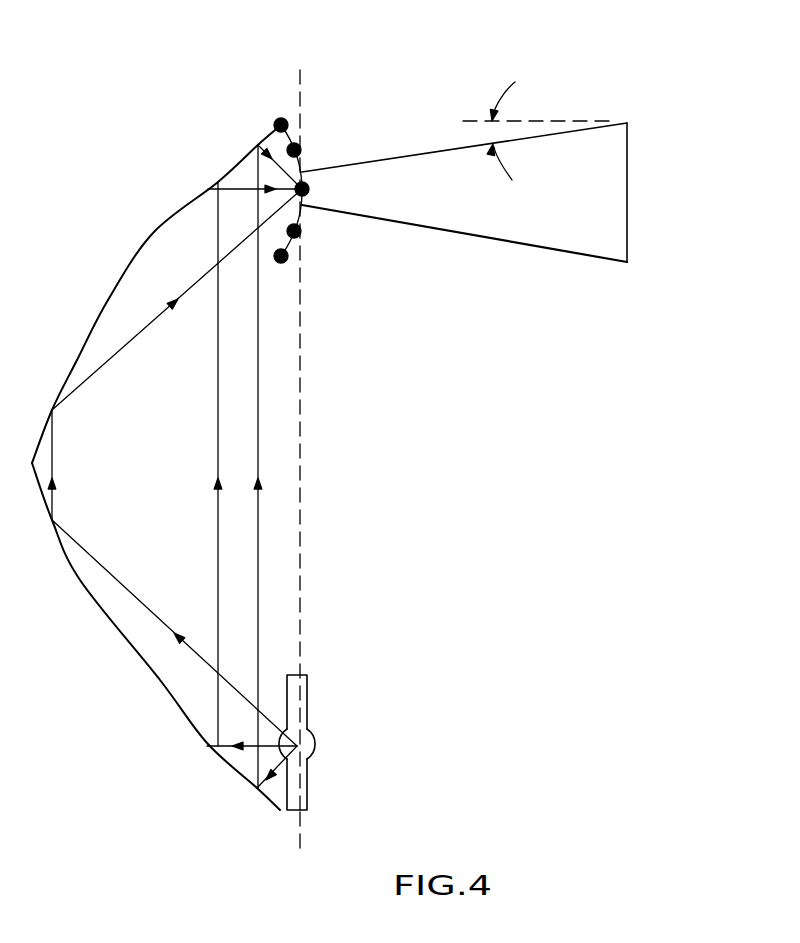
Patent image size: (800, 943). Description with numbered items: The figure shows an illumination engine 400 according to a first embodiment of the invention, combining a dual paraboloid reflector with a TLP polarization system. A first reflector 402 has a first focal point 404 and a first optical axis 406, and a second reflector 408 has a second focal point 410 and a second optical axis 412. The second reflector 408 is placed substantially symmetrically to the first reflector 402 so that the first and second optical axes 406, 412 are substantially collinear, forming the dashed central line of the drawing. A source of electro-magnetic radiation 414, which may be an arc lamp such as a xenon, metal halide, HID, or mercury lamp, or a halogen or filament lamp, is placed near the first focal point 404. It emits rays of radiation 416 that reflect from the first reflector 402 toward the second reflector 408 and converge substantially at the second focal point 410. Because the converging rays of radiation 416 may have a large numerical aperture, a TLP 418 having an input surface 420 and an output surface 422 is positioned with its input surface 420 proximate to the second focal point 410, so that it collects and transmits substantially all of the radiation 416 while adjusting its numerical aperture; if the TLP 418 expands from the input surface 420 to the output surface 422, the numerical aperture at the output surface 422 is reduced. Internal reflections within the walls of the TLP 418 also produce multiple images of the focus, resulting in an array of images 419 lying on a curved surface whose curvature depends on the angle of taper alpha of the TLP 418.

The illumination engine 400 is at (348, 471).
The first reflector 402 is at (156, 636).
The first focal point 404 is at (312, 752).
The first optical axis 406 is at (300, 852).
The second reflector 408 is at (156, 294).
The second focal point 410 is at (325, 189).
The second optical axis 412 is at (300, 424).
The source of electro-magnetic radiation 414 is at (333, 738).
The rays of radiation 416 is at (155, 466).
The TLP 418 is at (464, 212).
The array of images 419 is at (281, 270).
The input surface 420 is at (315, 228).
The output surface 422 is at (640, 253).